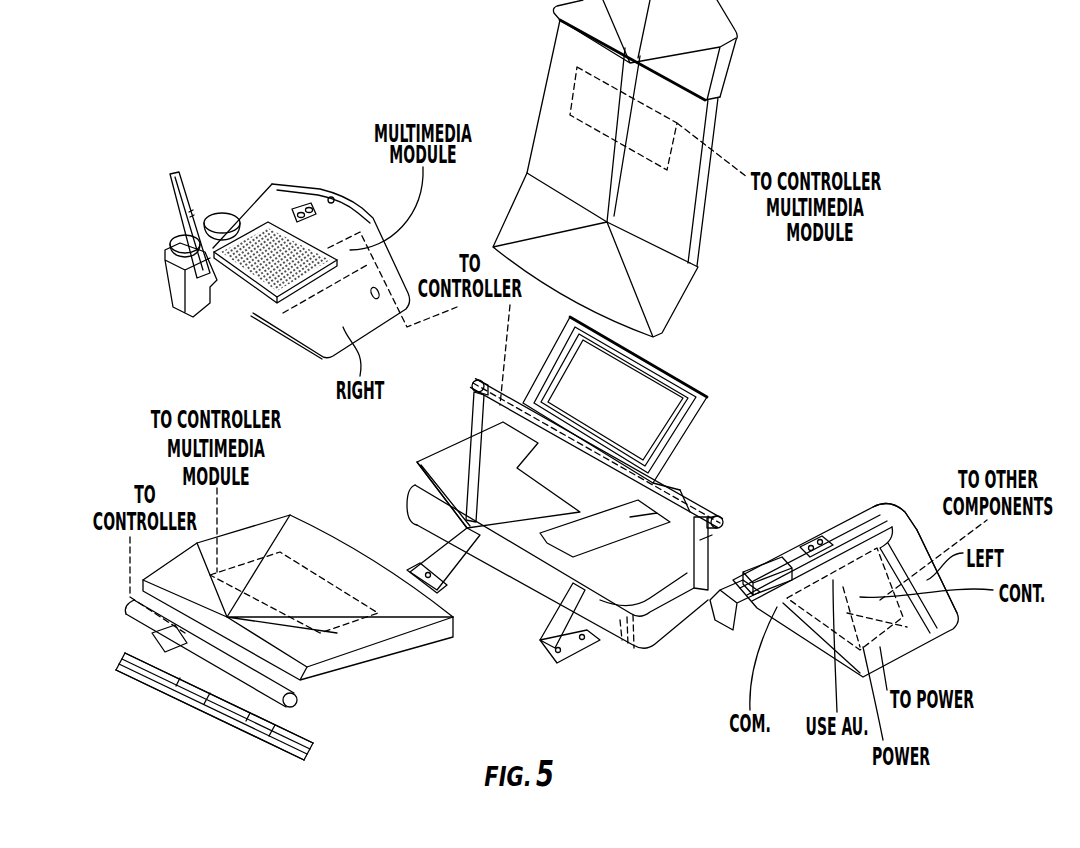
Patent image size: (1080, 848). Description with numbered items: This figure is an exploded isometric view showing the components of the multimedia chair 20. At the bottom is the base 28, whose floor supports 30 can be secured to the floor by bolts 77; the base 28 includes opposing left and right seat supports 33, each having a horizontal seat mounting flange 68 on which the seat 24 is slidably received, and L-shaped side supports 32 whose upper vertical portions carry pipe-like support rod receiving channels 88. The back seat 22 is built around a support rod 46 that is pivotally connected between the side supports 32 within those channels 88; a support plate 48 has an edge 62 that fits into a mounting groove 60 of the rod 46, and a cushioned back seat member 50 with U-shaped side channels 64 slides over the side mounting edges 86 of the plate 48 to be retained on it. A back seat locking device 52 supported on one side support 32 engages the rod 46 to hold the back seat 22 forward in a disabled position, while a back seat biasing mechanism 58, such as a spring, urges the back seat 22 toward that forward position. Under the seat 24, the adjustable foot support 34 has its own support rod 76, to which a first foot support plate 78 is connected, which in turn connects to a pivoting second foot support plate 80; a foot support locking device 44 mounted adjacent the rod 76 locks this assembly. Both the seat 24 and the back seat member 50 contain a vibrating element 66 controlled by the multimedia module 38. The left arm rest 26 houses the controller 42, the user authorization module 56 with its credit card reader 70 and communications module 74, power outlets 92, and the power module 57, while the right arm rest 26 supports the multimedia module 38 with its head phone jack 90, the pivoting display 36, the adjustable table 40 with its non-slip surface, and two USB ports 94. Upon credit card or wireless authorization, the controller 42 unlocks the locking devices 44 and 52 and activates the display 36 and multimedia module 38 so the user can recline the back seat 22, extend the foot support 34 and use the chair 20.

The multimedia chair 20 is at (800, 336).
The back seat 22 is at (740, 368).
The seat 24 is at (390, 650).
The arm rest 26 is at (321, 178).
The base 28 is at (497, 577).
The floor supports 30 is at (580, 642).
The side supports 32 is at (414, 480).
The seat supports 33 is at (491, 510).
The adjustable foot support 34 is at (333, 723).
The display 36 is at (177, 180).
The multimedia module 38 is at (270, 303).
The adjustable table 40 is at (243, 303).
The controller 42 is at (833, 617).
The foot support locking device 44 is at (150, 642).
The support rod 46 is at (683, 490).
The support plate 48 is at (599, 400).
The back seat member 50 is at (710, 113).
The back seat locking device 52 is at (473, 386).
The user authorization module 56 is at (900, 520).
The power module 57 is at (907, 630).
The back seat biasing mechanism 58 is at (690, 512).
The mounting groove 60 is at (523, 407).
The edge 62 is at (680, 480).
The side channels 64 is at (690, 265).
The vibrating element 66 is at (570, 97).
The seat mounting flange 68 is at (453, 455).
The credit card reader 70 is at (770, 557).
The communications module 74 is at (823, 587).
The support rod 76 is at (133, 603).
The bolts 77 is at (567, 652).
The first foot support plate 78 is at (307, 743).
The second foot support plate 80 is at (300, 760).
The side mounting edges 86 is at (690, 390).
The support rod receiving channels 88 is at (492, 397).
The head phone jack 90 is at (331, 198).
The power outlets 92 is at (817, 547).
The USB ports 94 is at (303, 207).